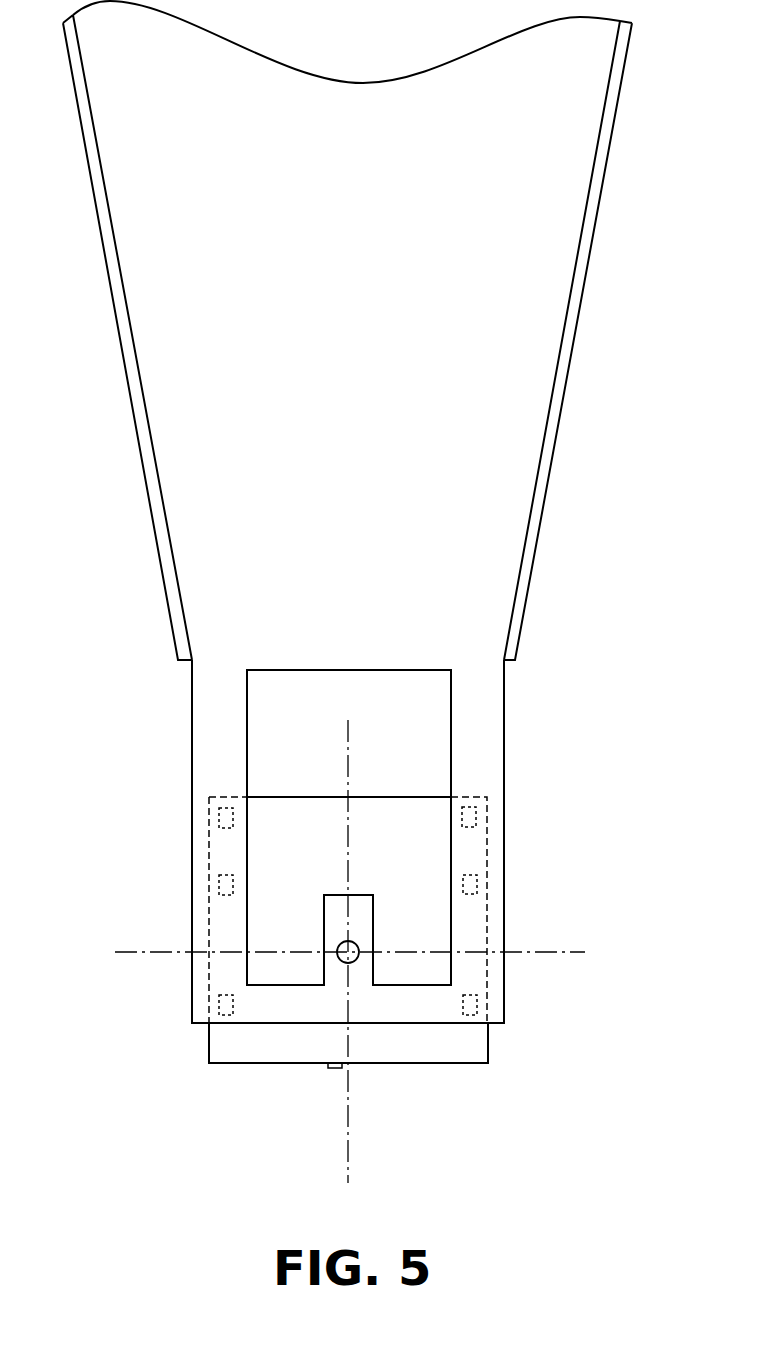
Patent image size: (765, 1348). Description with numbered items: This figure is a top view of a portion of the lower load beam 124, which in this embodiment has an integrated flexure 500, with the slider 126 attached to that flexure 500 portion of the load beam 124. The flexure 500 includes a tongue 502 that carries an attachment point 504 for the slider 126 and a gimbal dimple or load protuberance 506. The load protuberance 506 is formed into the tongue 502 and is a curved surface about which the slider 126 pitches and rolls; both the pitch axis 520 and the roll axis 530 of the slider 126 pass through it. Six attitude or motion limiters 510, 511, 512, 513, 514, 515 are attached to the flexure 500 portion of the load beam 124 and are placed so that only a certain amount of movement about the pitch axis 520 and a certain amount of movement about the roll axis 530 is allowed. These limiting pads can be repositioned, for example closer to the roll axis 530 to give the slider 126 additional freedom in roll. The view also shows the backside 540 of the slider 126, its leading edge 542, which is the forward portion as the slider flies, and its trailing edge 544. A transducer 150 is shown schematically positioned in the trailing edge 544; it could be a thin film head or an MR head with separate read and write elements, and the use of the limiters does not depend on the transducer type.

The load beam 124 is at (500, 513).
The flexure 500 is at (490, 734).
The backside 540 is at (366, 809).
The leading edge 542 is at (315, 796).
The attachment point 504 is at (353, 902).
The tongue 502 is at (375, 939).
The load protuberance 506 is at (340, 943).
The pitch axis 520 is at (152, 950).
The roll axis 530 is at (347, 1140).
The attitude limiter 510 is at (472, 817).
The attitude limiter 511 is at (472, 883).
The attitude limiter 512 is at (472, 1003).
The attitude limiter 513 is at (220, 1003).
The attitude limiter 514 is at (220, 883).
The attitude limiter 515 is at (220, 810).
The slider 126 is at (472, 1045).
The trailing edge 544 is at (403, 1065).
The transducer 150 is at (340, 1066).